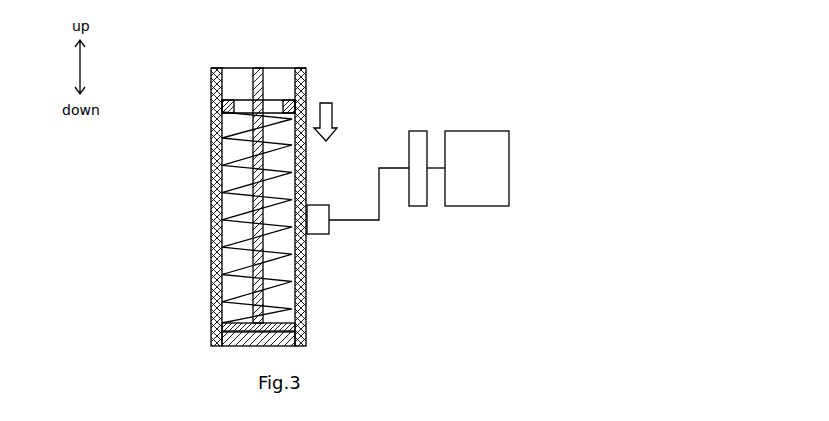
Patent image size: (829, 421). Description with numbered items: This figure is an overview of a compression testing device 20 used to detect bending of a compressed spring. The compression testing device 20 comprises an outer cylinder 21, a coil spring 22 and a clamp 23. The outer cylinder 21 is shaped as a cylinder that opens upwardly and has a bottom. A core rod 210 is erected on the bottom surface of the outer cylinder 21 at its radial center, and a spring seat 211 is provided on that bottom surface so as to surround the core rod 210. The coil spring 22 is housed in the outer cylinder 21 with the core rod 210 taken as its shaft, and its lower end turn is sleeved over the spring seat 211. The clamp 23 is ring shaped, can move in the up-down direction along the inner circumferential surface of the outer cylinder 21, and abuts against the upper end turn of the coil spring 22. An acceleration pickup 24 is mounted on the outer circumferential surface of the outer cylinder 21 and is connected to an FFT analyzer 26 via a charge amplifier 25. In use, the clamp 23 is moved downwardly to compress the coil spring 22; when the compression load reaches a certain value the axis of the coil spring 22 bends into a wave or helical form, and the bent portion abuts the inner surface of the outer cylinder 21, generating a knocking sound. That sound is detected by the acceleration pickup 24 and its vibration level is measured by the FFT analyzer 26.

The compression testing device 20 is at (352, 52).
The outer cylinder 21 is at (212, 140).
The coil spring 22 is at (230, 203).
The clamp 23 is at (212, 84).
The acceleration pickup 24 is at (320, 236).
The charge amplifier 25 is at (418, 131).
The FFT analyzer 26 is at (478, 131).
The core rod 210 is at (257, 68).
The spring seat 211 is at (226, 328).